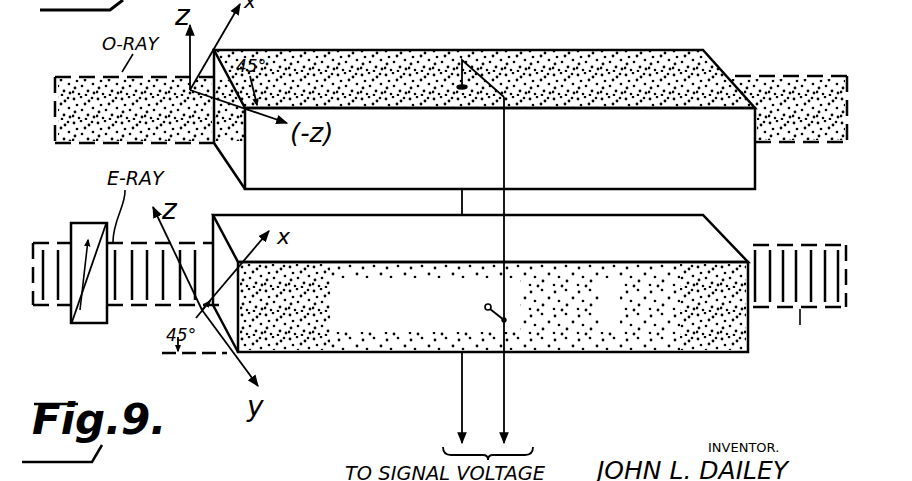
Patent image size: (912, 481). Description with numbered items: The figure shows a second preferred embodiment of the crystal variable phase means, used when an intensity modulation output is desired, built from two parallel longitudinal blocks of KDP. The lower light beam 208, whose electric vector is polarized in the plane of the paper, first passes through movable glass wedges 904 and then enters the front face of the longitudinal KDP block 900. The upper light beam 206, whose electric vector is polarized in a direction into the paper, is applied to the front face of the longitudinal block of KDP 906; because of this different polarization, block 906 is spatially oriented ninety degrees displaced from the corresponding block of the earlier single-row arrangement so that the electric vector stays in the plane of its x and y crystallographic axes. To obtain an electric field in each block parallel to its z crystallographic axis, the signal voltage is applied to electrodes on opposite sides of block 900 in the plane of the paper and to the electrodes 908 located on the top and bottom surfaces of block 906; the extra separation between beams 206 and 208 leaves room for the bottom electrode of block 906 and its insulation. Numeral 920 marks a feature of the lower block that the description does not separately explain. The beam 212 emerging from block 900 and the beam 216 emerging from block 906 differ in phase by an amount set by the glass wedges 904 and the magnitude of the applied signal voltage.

The light beam 206 is at (56, 77).
The light beam 208 is at (44, 242).
The movable glass wedges 904 is at (85, 325).
The longitudinal block of KDP 906 is at (350, 51).
The electrodes 908 is at (540, 77).
The beam 216 is at (782, 75).
The beam 212 is at (766, 246).
The longitudinal KDP block 900 is at (280, 353).
The electrode of second crystal 920 is at (378, 328).